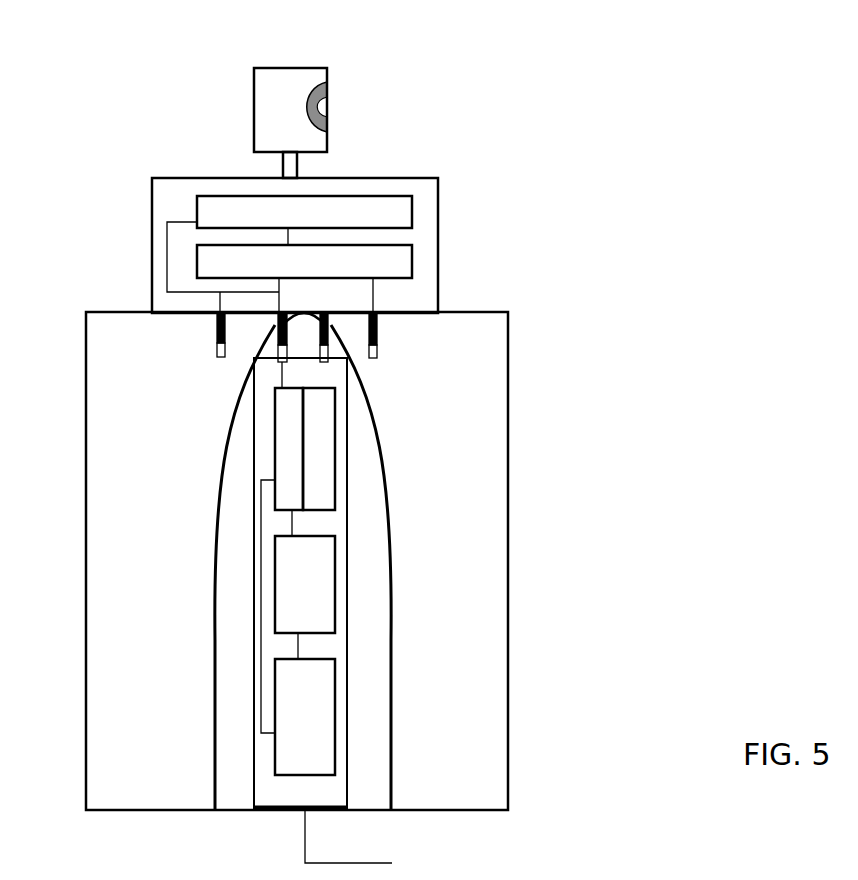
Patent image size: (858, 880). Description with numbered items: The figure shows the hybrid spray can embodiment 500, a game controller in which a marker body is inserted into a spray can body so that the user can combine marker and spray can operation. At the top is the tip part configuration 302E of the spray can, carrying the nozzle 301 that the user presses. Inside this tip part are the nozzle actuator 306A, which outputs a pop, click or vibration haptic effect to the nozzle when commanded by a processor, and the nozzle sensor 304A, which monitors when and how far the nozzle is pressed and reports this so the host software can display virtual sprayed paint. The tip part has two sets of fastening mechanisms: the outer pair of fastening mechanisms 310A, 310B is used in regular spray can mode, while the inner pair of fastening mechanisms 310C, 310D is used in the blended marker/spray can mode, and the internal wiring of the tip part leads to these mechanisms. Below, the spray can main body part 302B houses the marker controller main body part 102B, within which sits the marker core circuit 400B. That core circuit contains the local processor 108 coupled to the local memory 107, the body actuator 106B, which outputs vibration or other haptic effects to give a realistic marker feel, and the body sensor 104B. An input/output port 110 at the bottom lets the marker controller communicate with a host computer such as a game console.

The spray can embodiment 500 is at (748, 101).
The nozzle 301 is at (325, 83).
The tip part configuration 302E is at (438, 232).
The nozzle actuator 306A is at (385, 195).
The nozzle sensor 304A is at (198, 260).
The main body part 302B is at (508, 437).
The fastening mechanism 310A is at (213, 325).
The fastening mechanism 310B is at (377, 337).
The fastening mechanism 310C is at (273, 337).
The fastening mechanism 310D is at (347, 340).
The main body part 102B is at (380, 580).
The marker core circuit 400B is at (354, 688).
The local processor 108 is at (273, 432).
The local memory 107 is at (335, 478).
The body actuator 106B is at (275, 617).
The body sensor 104B is at (283, 740).
The input/output port 110 is at (303, 827).